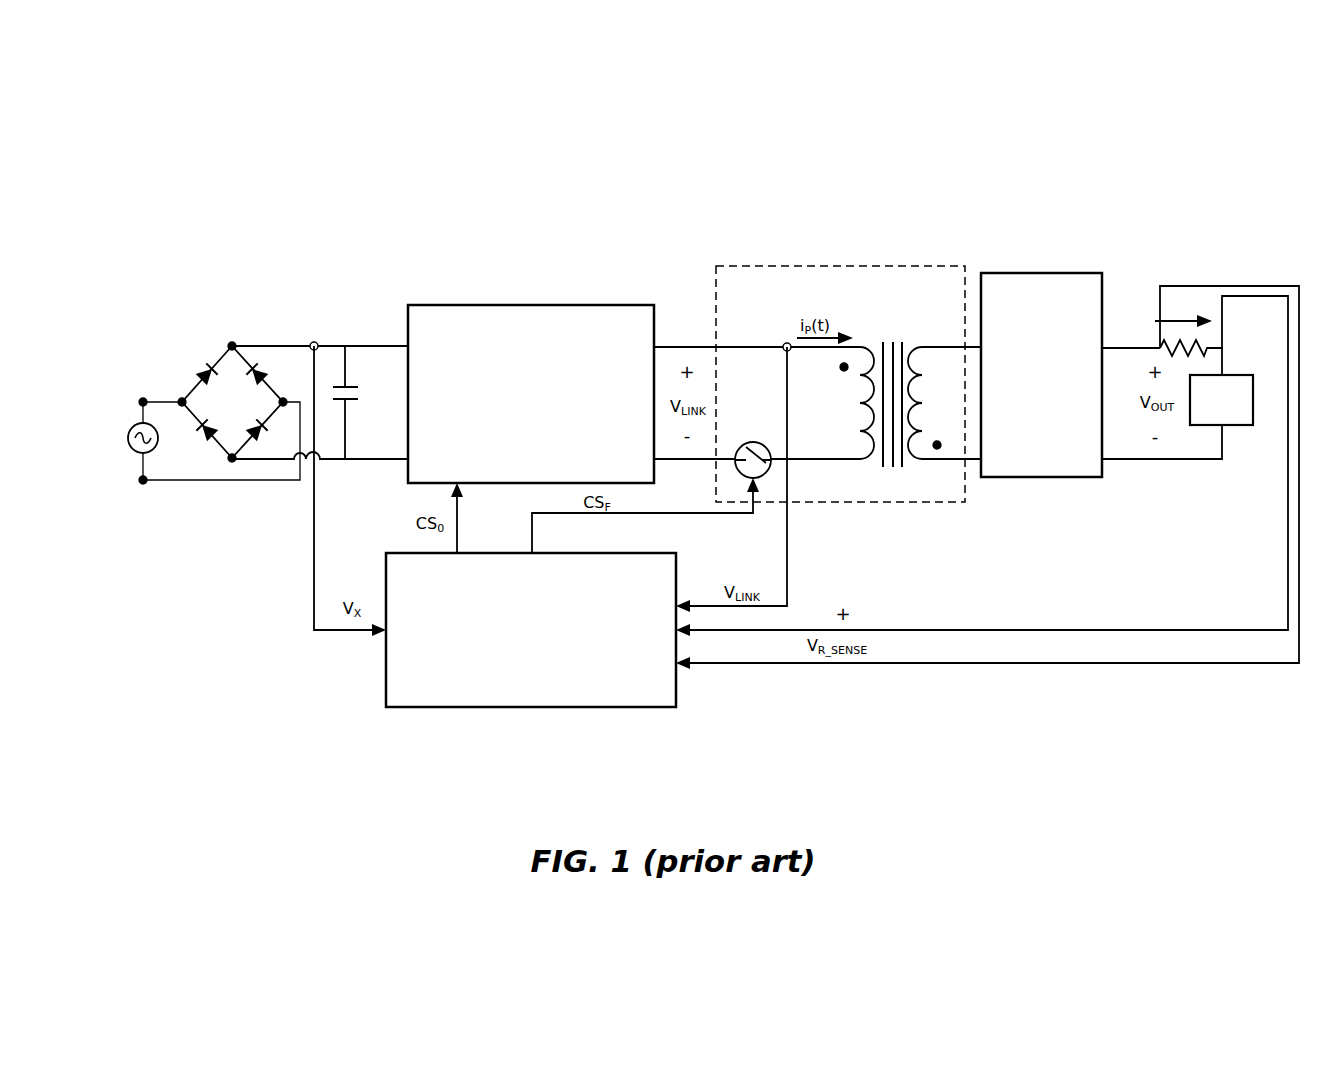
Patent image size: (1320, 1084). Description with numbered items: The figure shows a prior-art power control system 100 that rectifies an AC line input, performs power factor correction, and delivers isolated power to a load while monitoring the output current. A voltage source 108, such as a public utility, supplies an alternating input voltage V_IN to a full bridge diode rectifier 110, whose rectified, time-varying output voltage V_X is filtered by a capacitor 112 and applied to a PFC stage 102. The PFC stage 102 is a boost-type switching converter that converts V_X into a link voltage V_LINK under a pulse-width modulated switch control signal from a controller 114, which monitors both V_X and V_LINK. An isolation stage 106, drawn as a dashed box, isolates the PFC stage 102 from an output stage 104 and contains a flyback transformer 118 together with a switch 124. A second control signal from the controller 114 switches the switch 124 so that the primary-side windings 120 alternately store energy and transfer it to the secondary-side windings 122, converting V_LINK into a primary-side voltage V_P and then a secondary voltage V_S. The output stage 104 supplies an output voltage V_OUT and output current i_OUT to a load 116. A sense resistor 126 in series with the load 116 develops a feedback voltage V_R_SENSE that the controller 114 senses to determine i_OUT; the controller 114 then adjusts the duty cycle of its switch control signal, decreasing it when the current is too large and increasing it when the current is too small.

The power control system 100 is at (929, 176).
The PFC stage 102 is at (516, 415).
The output stage 104 is at (1047, 273).
The isolation stage 106 is at (763, 266).
The voltage source 108 is at (138, 452).
The full bridge diode rectifier 110 is at (217, 409).
The capacitor 112 is at (347, 395).
The controller 114 is at (514, 666).
The load 116 is at (1225, 375).
The transformer 118 is at (893, 332).
The primary-side windings 120 is at (863, 461).
The secondary-side windings 122 is at (927, 461).
The switch 124 is at (754, 441).
The sense resistor 126 is at (1215, 347).